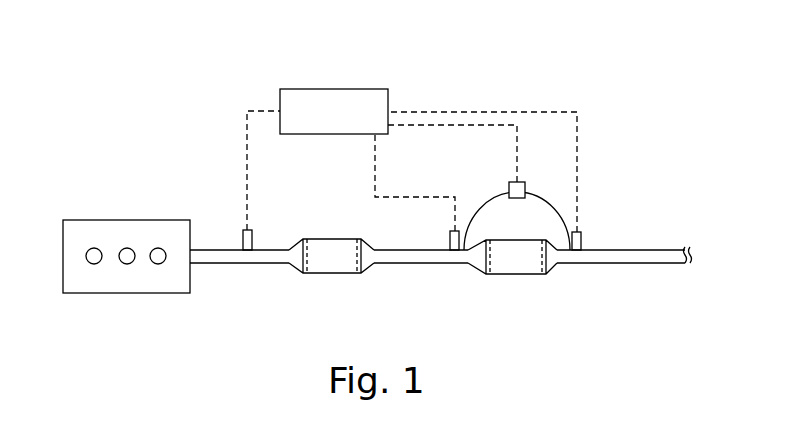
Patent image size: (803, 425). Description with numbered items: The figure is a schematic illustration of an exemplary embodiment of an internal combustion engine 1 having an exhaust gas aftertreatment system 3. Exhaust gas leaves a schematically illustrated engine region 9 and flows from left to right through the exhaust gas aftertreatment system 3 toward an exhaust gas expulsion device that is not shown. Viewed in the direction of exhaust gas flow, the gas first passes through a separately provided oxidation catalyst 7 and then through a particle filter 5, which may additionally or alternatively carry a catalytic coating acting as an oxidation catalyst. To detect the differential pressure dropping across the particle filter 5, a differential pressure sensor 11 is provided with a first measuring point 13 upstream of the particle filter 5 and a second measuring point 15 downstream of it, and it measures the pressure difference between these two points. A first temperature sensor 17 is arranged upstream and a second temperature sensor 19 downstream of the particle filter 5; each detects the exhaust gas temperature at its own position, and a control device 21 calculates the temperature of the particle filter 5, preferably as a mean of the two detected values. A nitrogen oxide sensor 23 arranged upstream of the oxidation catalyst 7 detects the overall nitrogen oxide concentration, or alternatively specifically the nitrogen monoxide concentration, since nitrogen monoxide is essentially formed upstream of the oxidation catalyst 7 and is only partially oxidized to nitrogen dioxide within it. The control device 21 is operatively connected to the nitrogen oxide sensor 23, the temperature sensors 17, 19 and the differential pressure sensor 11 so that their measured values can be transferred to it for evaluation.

The internal combustion engine 1 is at (176, 90).
The exhaust gas aftertreatment system 3 is at (617, 180).
The particle filter 5 is at (515, 274).
The oxidation catalyst 7 is at (331, 274).
The engine region 9 is at (127, 220).
The differential pressure sensor 11 is at (521, 182).
The first measuring point 13 is at (464, 241).
The second measuring point 15 is at (566, 239).
The first temperature sensor 17 is at (448, 240).
The second temperature sensor 19 is at (583, 243).
The control device 21 is at (334, 89).
The nitrogen oxide sensor 23 is at (253, 242).